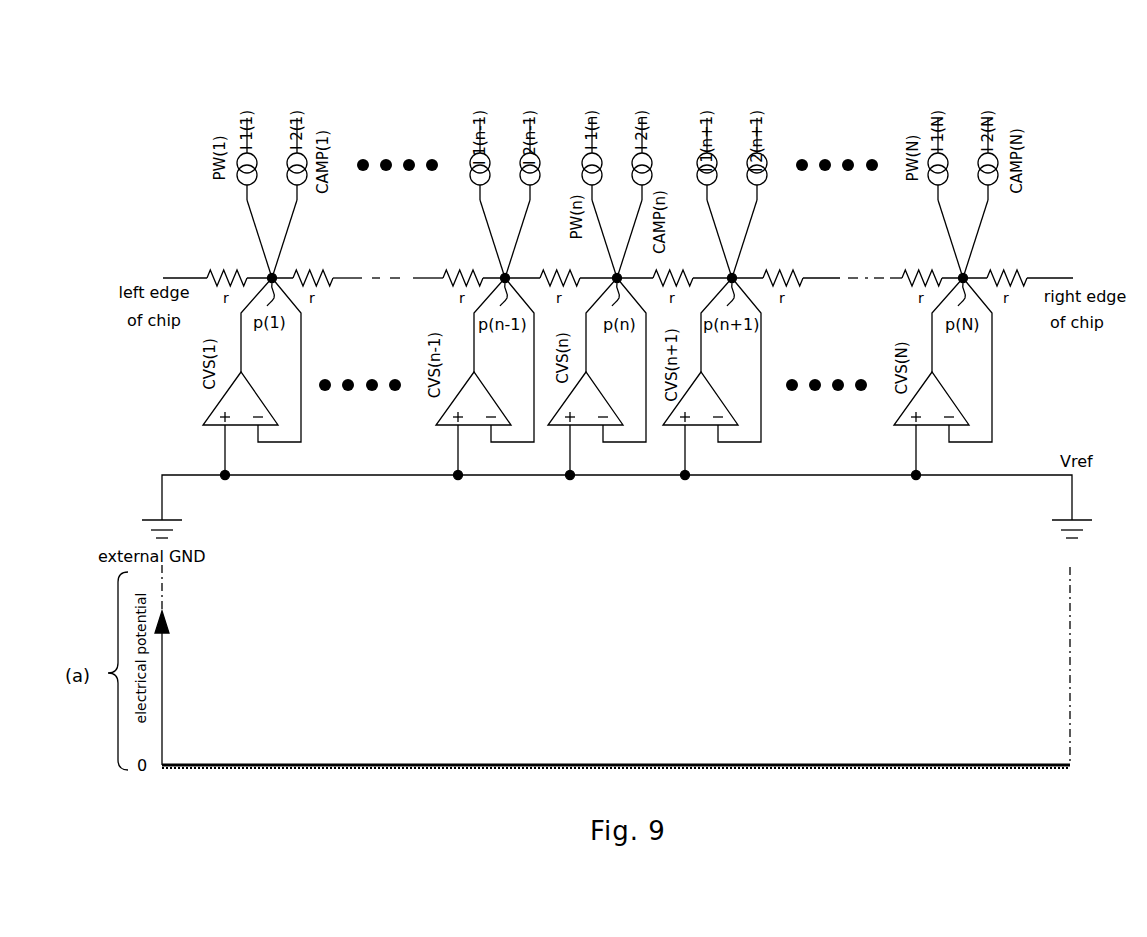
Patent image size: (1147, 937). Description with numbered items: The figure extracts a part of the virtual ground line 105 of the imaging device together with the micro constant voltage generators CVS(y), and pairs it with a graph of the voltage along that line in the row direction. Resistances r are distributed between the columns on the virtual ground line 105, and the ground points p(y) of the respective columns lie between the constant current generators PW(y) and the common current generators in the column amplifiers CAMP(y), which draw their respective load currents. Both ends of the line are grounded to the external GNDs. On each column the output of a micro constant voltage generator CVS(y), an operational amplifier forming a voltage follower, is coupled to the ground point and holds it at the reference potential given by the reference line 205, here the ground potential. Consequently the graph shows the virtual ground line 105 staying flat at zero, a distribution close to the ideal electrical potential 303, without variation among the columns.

The virtual ground line 105 is at (382, 278).
The Vref line 205 is at (373, 477).
The ideal electrical potential 303 is at (662, 762).